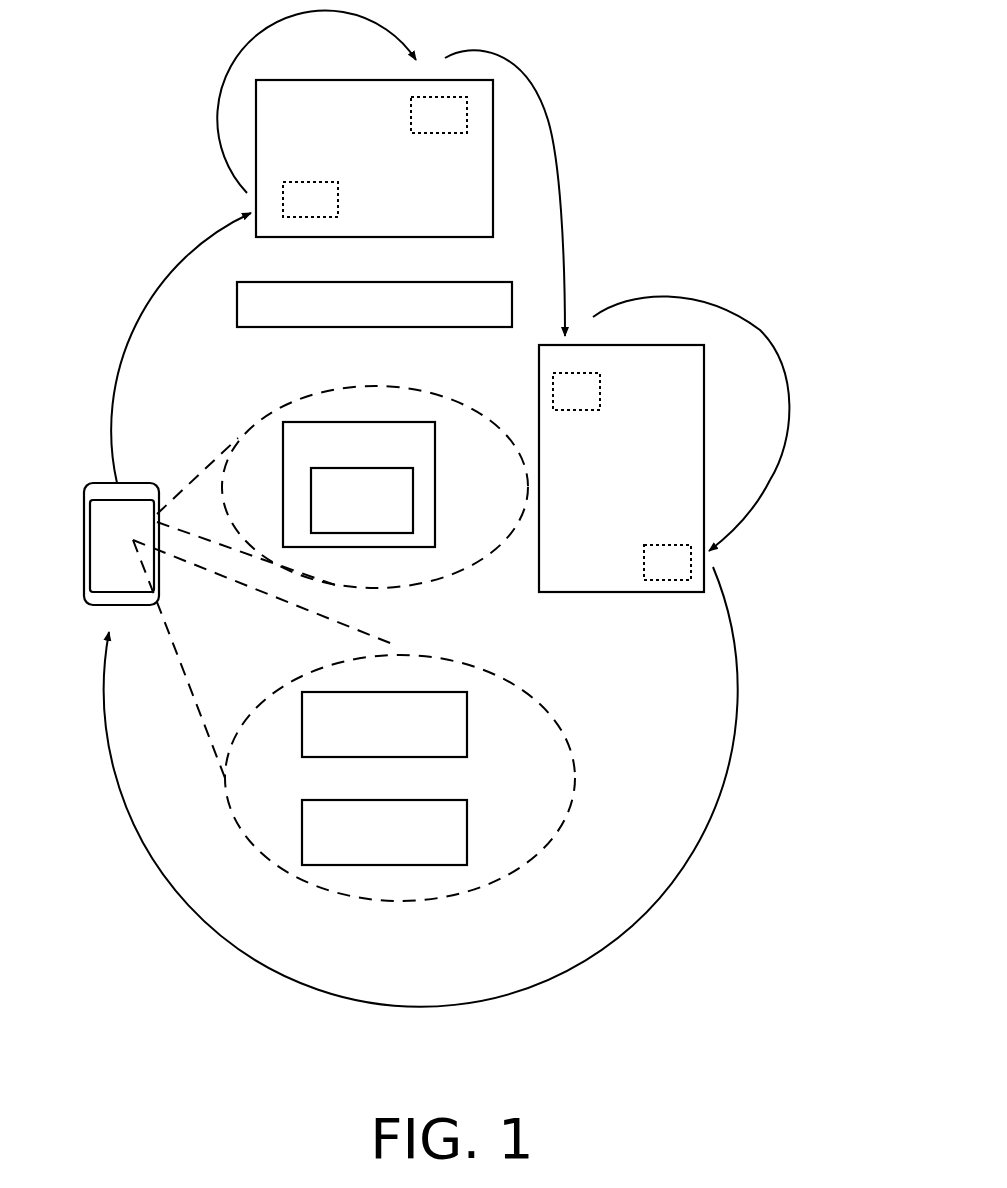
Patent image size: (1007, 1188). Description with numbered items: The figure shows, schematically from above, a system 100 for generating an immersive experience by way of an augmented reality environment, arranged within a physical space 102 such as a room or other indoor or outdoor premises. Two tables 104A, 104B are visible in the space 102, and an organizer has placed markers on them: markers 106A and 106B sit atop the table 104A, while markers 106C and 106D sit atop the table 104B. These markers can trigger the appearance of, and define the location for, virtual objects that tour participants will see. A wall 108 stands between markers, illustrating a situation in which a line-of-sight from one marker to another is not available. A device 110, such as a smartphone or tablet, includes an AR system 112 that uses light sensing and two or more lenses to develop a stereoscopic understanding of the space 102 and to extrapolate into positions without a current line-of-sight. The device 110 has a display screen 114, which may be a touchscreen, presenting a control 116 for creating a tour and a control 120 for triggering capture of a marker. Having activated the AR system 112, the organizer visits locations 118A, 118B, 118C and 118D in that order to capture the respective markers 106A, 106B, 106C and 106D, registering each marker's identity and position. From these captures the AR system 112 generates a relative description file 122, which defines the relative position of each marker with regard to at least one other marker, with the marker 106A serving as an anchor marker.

The system 100 is at (135, 966).
The space 102 is at (722, 71).
The table 104A is at (470, 237).
The table 104B is at (568, 592).
The marker 106A is at (338, 200).
The marker 106B is at (411, 118).
The marker 106C is at (600, 385).
The marker 106D is at (644, 562).
The wall 108 is at (275, 327).
The device 110 is at (84, 494).
The AR system 112 is at (435, 443).
The display screen 114 is at (88, 558).
The control 116 is at (467, 720).
The location 118A is at (284, 250).
The location 118B is at (390, 66).
The location 118C is at (538, 331).
The location 118D is at (734, 565).
The control 120 is at (467, 828).
The relative description file 122 is at (413, 493).